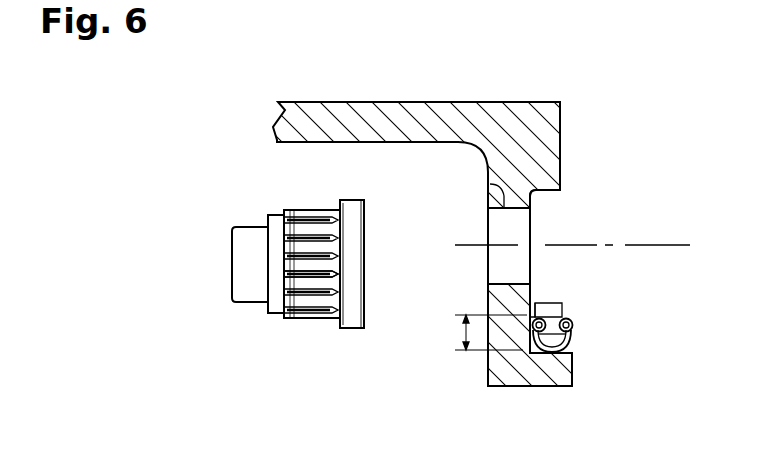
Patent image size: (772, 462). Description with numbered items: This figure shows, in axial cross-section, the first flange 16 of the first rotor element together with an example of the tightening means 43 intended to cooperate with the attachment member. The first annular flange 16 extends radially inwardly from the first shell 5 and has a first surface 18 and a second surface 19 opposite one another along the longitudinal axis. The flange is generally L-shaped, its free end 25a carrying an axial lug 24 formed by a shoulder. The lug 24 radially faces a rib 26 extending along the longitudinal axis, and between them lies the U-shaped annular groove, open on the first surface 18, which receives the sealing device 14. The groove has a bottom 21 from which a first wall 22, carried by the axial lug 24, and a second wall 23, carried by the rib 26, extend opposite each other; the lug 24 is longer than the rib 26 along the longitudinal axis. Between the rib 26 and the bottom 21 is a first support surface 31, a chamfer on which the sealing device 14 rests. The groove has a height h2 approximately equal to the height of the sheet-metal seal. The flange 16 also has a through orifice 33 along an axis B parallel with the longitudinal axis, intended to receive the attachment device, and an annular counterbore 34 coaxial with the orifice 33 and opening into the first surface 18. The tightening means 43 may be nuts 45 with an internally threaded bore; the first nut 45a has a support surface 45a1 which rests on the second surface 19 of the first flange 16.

The first shell 5 is at (420, 147).
The first annular flange 16 is at (531, 132).
The first surface 18 is at (567, 158).
The counterbore 34 is at (543, 203).
The orifice 33 is at (490, 186).
The axis B is at (572, 234).
The sealing device 14 is at (520, 334).
The second surface 19 is at (487, 370).
The free end 25a is at (489, 380).
The first wall 22 is at (518, 355).
The axial lug 24 is at (536, 372).
The rib 26 is at (553, 308).
The first support surface 31 is at (537, 308).
The bottom 21 is at (572, 338).
The second wall 23 is at (572, 330).
The height of the groove h2 is at (477, 332).
The tightening means 43 is at (276, 264).
The nut 45 is at (298, 226).
The first nut 45a is at (318, 284).
The support surface 45a1 is at (370, 314).